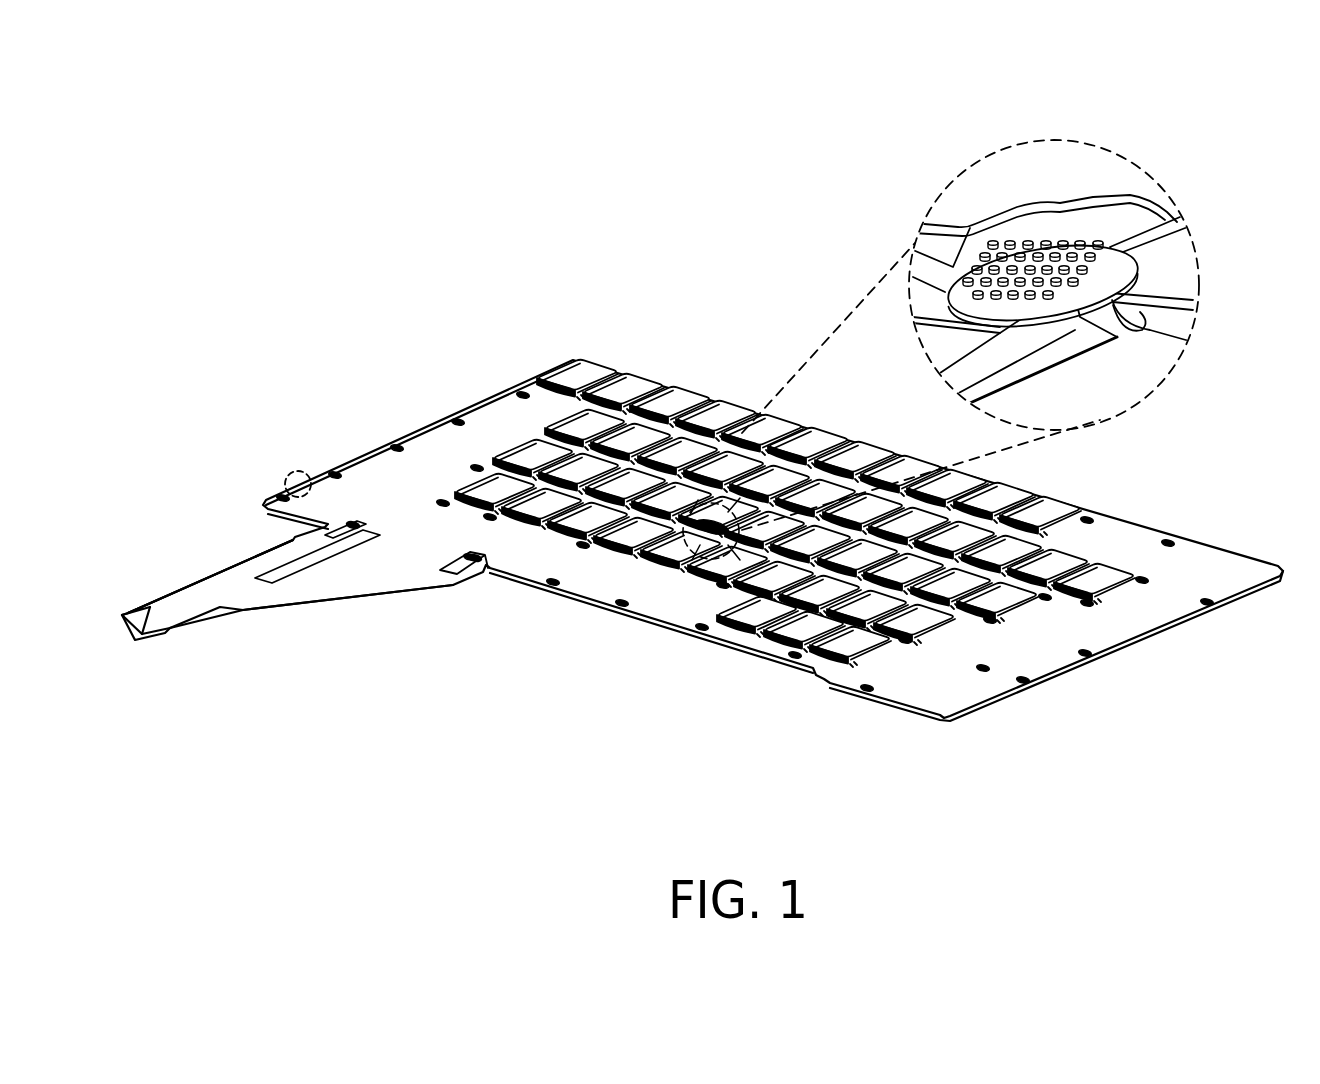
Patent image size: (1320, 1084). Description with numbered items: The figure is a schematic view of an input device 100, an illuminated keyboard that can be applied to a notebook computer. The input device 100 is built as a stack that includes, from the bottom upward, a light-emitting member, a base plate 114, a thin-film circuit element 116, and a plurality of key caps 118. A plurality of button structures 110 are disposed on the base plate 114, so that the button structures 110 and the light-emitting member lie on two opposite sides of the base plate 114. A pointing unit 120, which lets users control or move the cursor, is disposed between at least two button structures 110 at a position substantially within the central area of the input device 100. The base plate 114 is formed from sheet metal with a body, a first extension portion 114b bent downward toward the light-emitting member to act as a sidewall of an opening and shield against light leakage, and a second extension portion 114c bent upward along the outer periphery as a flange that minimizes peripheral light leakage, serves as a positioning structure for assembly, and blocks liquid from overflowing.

The input device 100 is at (883, 204).
The button structures 110 is at (568, 375).
The base plate 114 is at (860, 694).
The first extension portion 114b is at (1128, 318).
The second extension portion 114c is at (295, 470).
The thin-film circuit element 116 is at (228, 583).
The key caps 118 is at (688, 570).
The pointing unit 120 is at (1100, 247).